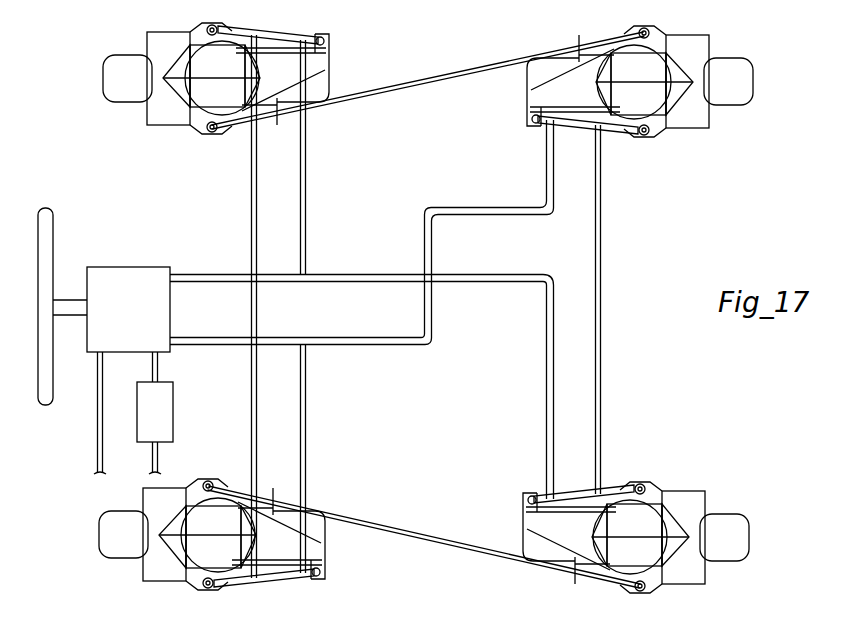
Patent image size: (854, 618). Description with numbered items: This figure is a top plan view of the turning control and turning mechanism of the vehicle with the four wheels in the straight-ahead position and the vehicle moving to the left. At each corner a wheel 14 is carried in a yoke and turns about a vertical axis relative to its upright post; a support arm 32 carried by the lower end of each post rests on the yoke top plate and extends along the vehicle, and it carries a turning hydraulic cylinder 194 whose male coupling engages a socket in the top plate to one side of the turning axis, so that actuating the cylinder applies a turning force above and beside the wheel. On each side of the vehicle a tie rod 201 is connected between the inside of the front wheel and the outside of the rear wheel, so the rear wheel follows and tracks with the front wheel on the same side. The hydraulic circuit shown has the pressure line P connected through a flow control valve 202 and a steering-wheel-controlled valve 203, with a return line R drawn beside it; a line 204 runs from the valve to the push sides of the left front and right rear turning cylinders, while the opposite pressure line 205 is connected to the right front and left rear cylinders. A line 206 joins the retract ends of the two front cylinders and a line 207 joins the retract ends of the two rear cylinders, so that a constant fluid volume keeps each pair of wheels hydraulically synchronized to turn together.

The wheel 14 is at (110, 70).
The support arm 32 is at (324, 66).
The turning hydraulic cylinder 194 is at (290, 35).
The tie rod 201 is at (463, 72).
The flow control valve 202 is at (170, 433).
The steering-wheel-controlled valve 203 is at (122, 269).
The line 204 is at (328, 339).
The opposite pressure line 205 is at (340, 276).
The line 206 is at (251, 204).
The line 207 is at (601, 214).
The return line R is at (97, 461).
The pressure line P is at (153, 462).